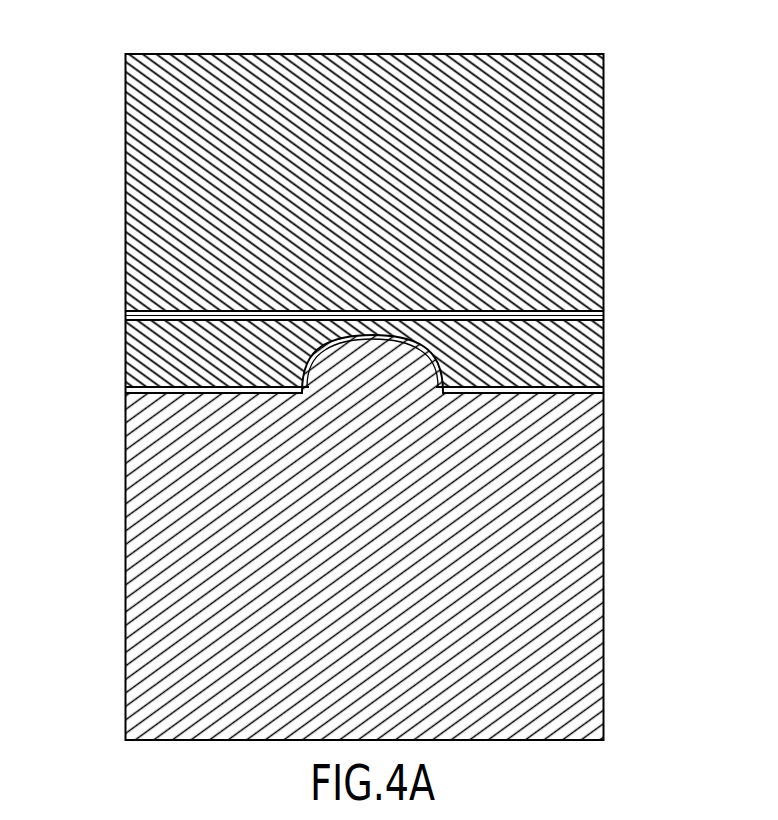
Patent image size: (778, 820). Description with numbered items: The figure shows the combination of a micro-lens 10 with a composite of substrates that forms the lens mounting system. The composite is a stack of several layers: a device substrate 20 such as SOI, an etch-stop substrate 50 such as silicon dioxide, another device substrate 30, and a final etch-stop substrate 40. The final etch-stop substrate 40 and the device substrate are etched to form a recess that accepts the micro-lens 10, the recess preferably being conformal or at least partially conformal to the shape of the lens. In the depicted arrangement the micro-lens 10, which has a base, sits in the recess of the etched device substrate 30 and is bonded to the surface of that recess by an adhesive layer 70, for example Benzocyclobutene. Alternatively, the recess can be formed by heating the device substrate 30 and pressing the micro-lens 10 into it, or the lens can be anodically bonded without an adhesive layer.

The micro-lens 10 is at (375, 378).
The device substrate 20 is at (170, 54).
The device substrate 30 is at (597, 355).
The final etch-stop substrate 40 is at (603, 392).
The etch-stop substrate 50 is at (604, 313).
The adhesive layer 70 is at (313, 352).